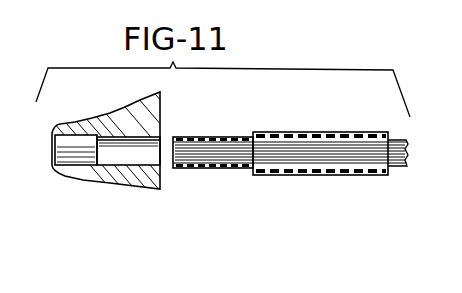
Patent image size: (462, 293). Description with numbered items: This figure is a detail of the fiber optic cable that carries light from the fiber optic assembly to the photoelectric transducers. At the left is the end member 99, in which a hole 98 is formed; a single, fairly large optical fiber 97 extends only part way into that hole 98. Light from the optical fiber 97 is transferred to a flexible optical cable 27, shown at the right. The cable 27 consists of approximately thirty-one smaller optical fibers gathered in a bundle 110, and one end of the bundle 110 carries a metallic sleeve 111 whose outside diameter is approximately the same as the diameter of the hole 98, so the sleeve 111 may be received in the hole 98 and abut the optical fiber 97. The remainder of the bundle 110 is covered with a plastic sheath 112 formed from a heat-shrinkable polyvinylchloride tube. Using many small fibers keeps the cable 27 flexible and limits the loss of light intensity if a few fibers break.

The flexible optical cable 27 is at (270, 177).
The optical fiber 97 is at (53, 152).
The hole 98 is at (123, 160).
The end member 99 is at (127, 117).
The bundle 110 is at (402, 160).
The metallic sleeve 111 is at (195, 168).
The plastic sheath 112 is at (317, 132).